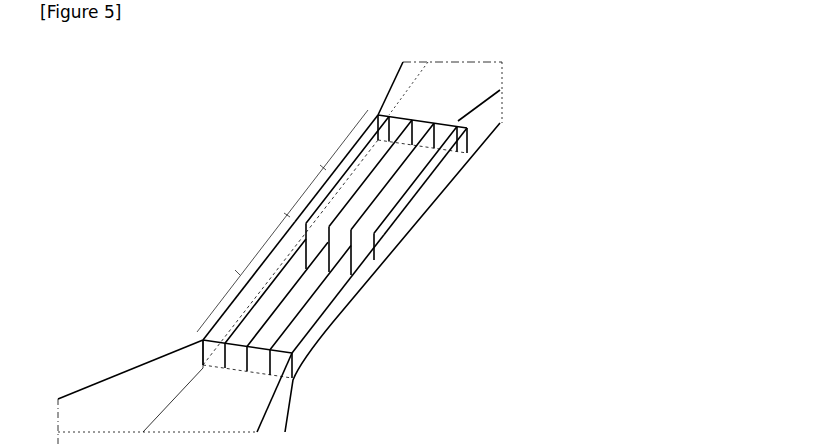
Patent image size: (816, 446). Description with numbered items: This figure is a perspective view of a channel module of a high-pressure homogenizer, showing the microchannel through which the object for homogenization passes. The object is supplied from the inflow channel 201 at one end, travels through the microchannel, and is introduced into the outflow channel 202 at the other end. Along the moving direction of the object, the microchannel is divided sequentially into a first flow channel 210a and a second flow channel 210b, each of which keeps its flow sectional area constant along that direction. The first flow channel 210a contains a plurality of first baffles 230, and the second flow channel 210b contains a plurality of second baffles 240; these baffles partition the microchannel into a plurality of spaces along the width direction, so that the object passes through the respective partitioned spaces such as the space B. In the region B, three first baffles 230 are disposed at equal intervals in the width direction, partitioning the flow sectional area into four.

The inflow channel 201 is at (130, 388).
The outflow channel 202 is at (402, 85).
The first flow channel 210a is at (237, 273).
The second flow channel 210b is at (323, 168).
The first baffles 230 is at (277, 285).
The second baffles 240 is at (373, 177).
The space partitioned by baffles B is at (325, 322).